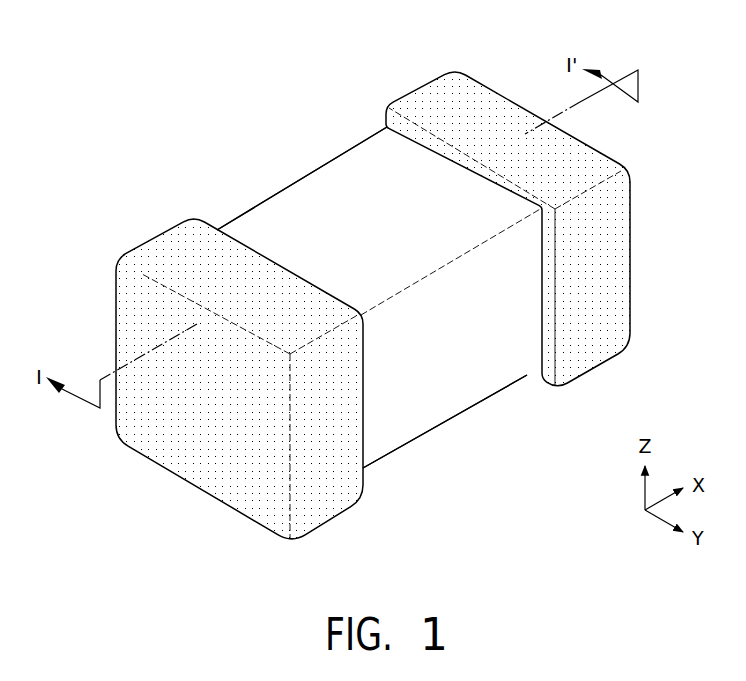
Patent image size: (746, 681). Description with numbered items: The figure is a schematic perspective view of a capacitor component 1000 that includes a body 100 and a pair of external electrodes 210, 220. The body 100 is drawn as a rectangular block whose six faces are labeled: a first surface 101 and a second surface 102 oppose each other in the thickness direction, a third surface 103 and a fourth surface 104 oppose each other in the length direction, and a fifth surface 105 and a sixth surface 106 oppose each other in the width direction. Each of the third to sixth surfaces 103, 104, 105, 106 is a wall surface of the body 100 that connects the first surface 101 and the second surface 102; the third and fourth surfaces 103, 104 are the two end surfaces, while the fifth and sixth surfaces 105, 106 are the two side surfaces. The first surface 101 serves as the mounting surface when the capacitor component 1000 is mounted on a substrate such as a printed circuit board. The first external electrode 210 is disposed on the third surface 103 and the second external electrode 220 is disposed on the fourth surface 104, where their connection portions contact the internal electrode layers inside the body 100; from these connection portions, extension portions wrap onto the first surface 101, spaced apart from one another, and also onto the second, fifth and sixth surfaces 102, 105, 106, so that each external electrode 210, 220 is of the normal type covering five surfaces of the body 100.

The capacitor component 1000 is at (166, 42).
The body 100 is at (373, 132).
The first surface 101 is at (413, 390).
The second surface 102 is at (327, 200).
The third surface 103 is at (208, 451).
The fourth surface 104 is at (578, 246).
The fifth surface 105 is at (457, 367).
The sixth surface 106 is at (312, 227).
The first external electrode 210 is at (173, 252).
The second external electrode 220 is at (433, 100).